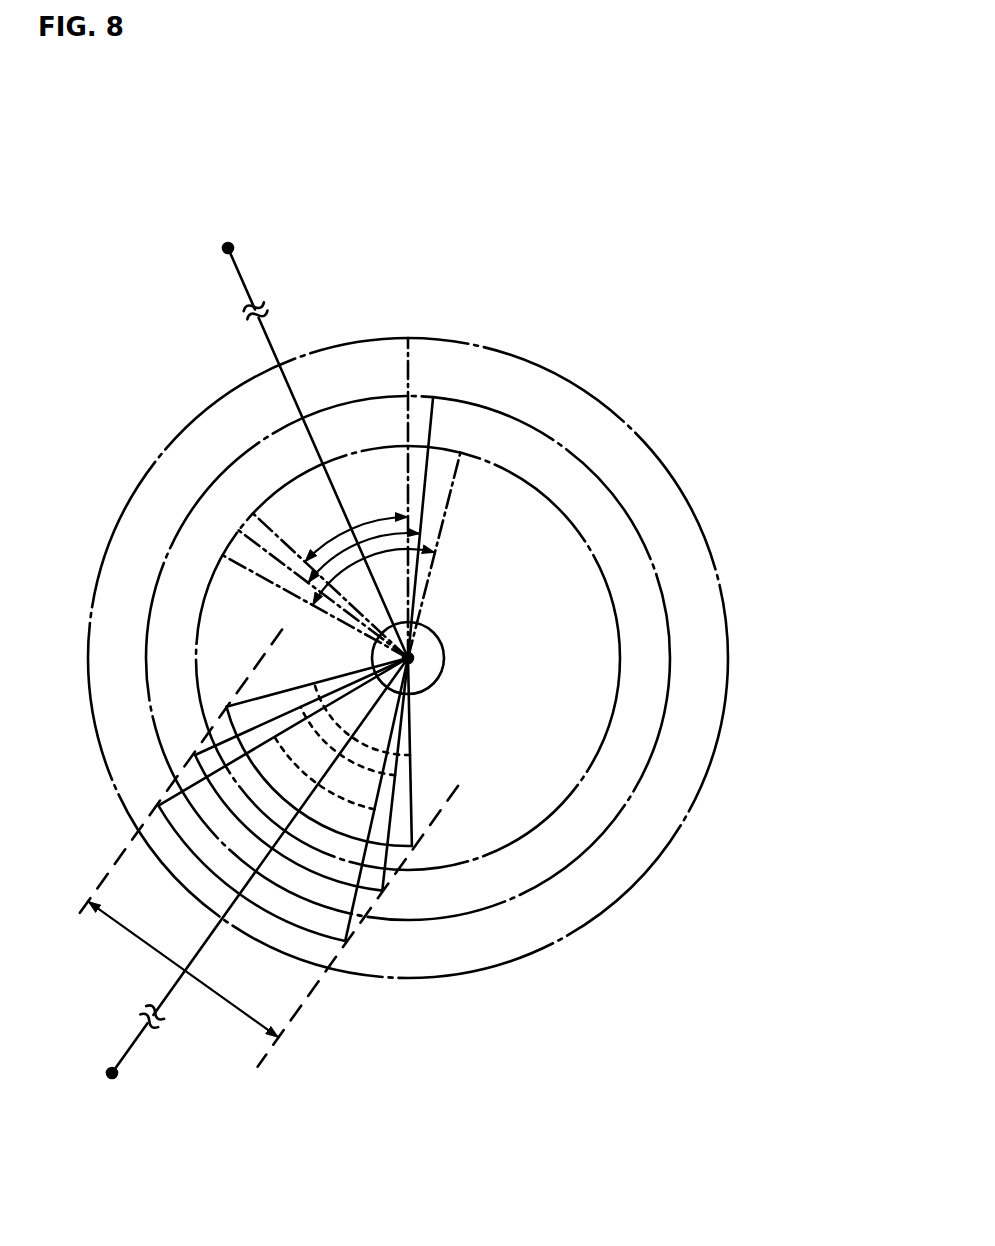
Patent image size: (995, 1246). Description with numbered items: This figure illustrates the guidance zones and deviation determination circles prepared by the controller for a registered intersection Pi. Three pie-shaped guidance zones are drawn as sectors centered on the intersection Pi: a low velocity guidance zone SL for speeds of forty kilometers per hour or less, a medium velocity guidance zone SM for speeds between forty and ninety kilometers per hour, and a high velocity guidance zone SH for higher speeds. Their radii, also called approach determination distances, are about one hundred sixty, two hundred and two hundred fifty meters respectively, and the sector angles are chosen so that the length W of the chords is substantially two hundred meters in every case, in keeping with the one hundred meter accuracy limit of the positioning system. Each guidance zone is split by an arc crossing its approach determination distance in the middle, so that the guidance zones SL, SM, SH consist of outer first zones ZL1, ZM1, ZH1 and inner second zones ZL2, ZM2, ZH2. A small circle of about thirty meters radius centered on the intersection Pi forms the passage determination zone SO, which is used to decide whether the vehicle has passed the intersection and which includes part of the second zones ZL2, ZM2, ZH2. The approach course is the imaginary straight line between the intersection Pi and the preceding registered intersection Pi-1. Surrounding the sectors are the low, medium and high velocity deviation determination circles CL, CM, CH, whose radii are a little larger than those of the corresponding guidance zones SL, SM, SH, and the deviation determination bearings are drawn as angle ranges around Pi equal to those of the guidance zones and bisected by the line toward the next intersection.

The registered intersection Pi-1 is at (257, 882).
The registered intersection Pi is at (419, 660).
The passage determination zone SO is at (437, 635).
The low velocity deviation determination circle CL is at (619, 633).
The medium velocity deviation determination circle CM is at (670, 674).
The high velocity deviation determination circle CH is at (728, 708).
The outer first zone ZL1 is at (404, 860).
The outer first zone ZM1 is at (376, 902).
The outer first zone ZH1 is at (307, 932).
The inner second zone ZL2 is at (426, 720).
The inner second zone ZM2 is at (410, 772).
The inner second zone ZH2 is at (370, 792).
The low velocity guidance zone SL is at (280, 690).
The medium velocity guidance zone SM is at (227, 737).
The high velocity guidance zone SH is at (192, 782).
The length of chords W is at (133, 938).